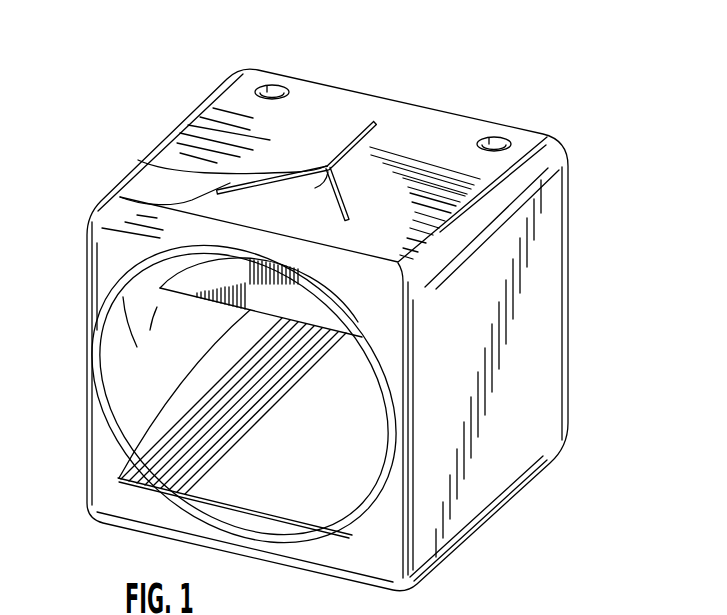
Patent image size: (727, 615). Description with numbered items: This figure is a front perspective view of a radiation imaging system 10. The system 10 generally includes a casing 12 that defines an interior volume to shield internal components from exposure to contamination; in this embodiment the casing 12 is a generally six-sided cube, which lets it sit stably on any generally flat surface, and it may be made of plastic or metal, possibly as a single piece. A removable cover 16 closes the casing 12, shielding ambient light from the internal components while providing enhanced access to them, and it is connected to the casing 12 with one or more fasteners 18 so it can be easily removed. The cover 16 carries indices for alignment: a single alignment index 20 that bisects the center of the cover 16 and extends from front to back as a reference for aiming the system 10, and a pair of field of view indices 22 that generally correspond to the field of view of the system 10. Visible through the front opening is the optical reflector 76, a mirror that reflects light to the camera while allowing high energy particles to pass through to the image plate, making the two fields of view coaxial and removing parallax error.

The radiation imaging system 10 is at (131, 65).
The casing 12 is at (570, 350).
The removable cover 16 is at (448, 133).
The fasteners 18 is at (285, 84).
The alignment index 20 is at (353, 140).
The field of view indices 22 is at (225, 220).
The optical reflector 76 is at (345, 470).